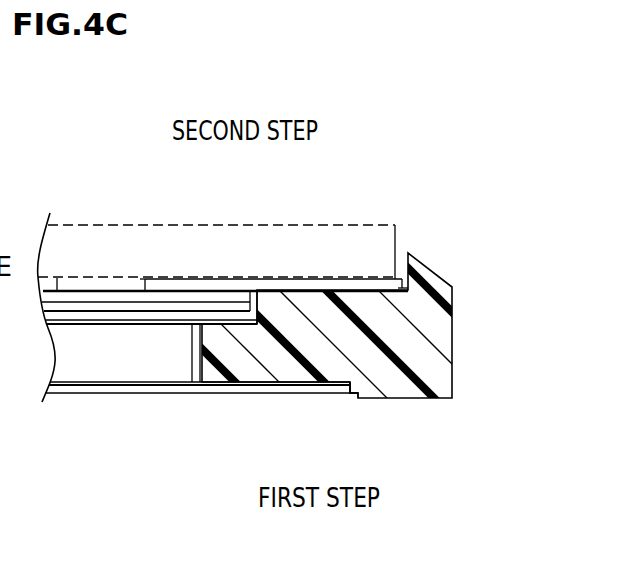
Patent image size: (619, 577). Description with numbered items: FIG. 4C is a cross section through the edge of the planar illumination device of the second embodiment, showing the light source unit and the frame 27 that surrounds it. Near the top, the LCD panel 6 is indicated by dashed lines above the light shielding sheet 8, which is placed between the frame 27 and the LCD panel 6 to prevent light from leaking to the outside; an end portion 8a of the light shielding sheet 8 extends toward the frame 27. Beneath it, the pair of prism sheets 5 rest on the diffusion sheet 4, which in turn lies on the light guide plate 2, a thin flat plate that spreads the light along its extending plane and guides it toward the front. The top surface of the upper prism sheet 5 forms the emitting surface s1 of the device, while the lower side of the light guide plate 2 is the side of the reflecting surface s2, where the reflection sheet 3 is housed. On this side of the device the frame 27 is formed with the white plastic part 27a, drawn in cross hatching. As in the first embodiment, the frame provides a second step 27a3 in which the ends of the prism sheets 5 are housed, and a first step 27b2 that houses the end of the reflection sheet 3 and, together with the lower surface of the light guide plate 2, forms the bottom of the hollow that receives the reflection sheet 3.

The light guide plate 2 is at (80, 366).
The reflection sheet 3 is at (200, 396).
The diffusion sheet 4 is at (95, 317).
The prism sheets 5 is at (228, 303).
The LCD panel 6 is at (312, 253).
The light shielding sheet 8 is at (345, 283).
The end of thin film layer 8a is at (140, 281).
The frame 27 is at (321, 315).
The white plastic part 27a is at (405, 390).
The frame inner portion 27a3 is at (226, 307).
The frame step portion 27b2 is at (348, 392).
The emitting surface s1 is at (57, 280).
The reflecting surface s2 is at (123, 389).